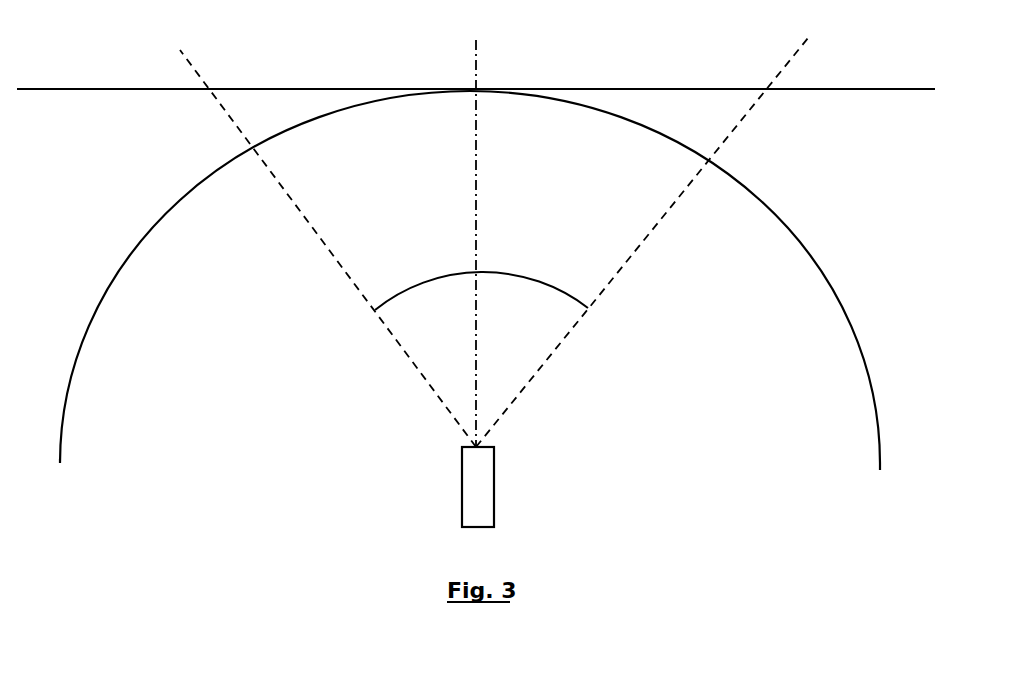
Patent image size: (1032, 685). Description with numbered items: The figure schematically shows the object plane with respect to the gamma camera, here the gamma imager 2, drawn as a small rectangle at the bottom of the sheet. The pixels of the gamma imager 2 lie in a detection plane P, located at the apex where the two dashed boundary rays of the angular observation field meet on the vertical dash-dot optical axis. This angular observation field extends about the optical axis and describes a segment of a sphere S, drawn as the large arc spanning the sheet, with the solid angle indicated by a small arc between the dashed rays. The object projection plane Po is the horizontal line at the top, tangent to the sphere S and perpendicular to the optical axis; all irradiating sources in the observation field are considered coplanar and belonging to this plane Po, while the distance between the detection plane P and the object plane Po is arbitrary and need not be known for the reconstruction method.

The gamma imager 2 is at (482, 494).
The detection plane P is at (477, 446).
The object projection plane Po is at (170, 88).
The sphere S is at (175, 204).